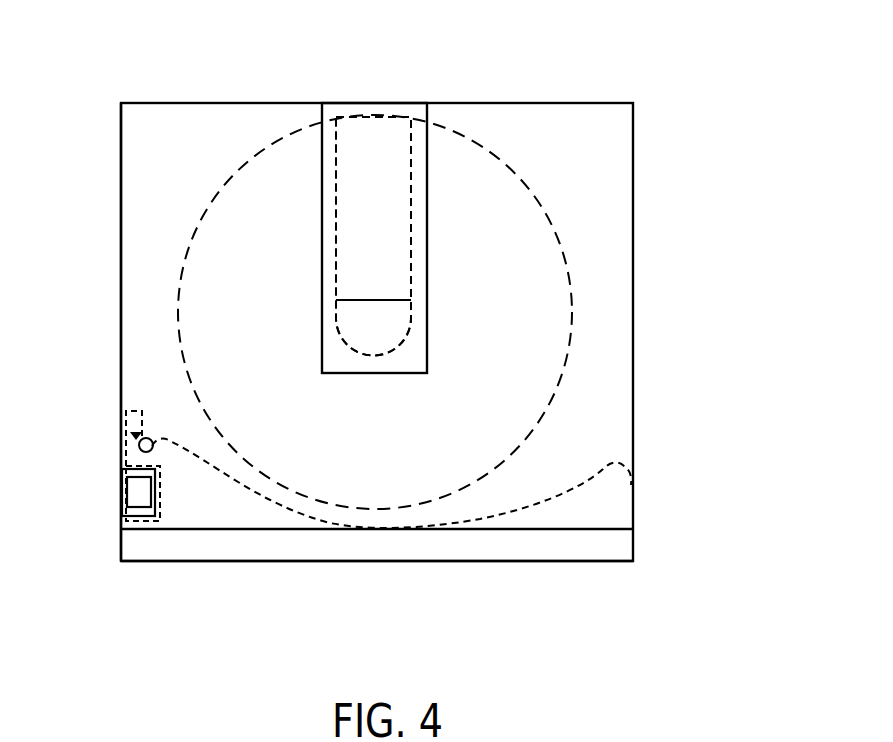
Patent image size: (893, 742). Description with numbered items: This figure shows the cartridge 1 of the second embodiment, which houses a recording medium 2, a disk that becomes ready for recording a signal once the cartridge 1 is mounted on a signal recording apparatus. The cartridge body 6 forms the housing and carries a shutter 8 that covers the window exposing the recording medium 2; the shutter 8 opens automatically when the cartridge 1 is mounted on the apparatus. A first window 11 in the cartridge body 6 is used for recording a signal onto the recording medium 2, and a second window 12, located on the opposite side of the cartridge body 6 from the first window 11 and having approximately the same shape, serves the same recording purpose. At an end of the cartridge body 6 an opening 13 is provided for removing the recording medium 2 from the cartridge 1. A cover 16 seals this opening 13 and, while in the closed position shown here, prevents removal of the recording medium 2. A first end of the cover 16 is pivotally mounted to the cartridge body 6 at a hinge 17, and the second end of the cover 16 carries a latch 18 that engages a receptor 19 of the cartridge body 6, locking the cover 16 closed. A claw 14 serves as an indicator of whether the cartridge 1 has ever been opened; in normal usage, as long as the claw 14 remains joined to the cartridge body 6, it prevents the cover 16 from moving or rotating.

The cartridge 1 is at (664, 86).
The recording medium 2 is at (245, 193).
The cartridge body 6 is at (153, 253).
The shutter 8 is at (357, 110).
The first window 11 is at (395, 193).
The second window 12 is at (373, 236).
The opening 13 is at (568, 531).
The claw 14 is at (135, 497).
The cover 16 is at (340, 548).
The hinge 17 is at (612, 512).
The latch 18 is at (118, 427).
The receptor 19 is at (139, 447).